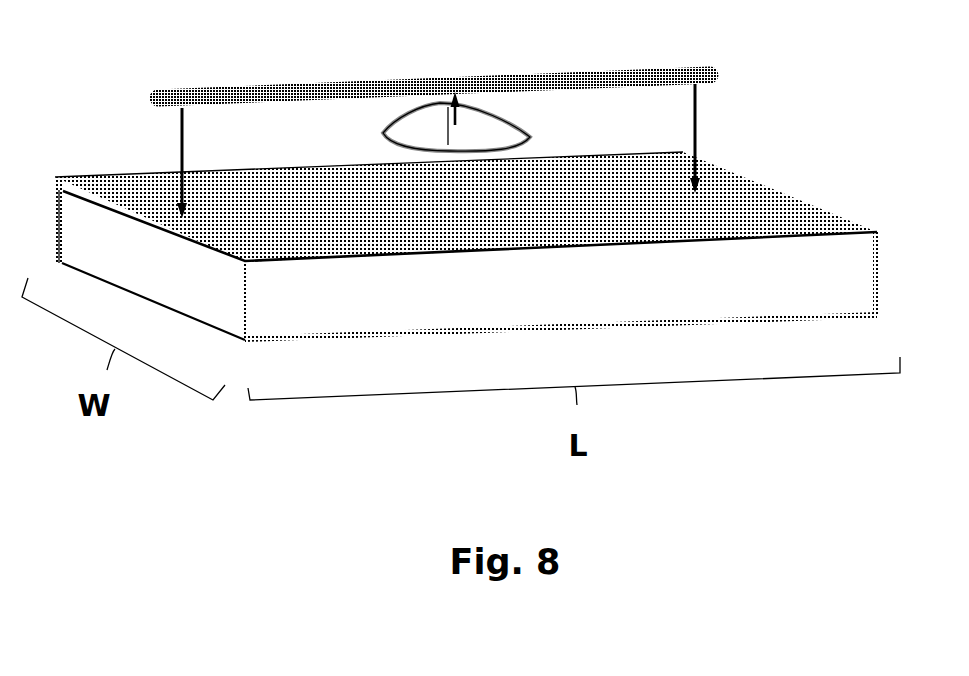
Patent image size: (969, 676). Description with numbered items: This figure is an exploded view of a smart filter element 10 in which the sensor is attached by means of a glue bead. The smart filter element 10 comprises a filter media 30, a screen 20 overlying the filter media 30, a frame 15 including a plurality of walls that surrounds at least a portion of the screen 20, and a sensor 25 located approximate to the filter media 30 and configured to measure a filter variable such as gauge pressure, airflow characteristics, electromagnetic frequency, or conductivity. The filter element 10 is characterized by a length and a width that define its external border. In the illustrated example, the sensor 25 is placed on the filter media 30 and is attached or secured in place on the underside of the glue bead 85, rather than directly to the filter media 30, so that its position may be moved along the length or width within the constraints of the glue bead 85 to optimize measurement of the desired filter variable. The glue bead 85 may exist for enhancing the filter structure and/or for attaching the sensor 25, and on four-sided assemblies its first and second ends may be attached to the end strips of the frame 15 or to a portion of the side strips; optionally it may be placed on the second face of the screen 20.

The smart filter element 10 is at (467, 213).
The frame 15 is at (597, 298).
The screen 20 is at (283, 193).
The sensor 25 is at (523, 140).
The filter media 30 is at (143, 270).
The glue bead 85 is at (293, 88).